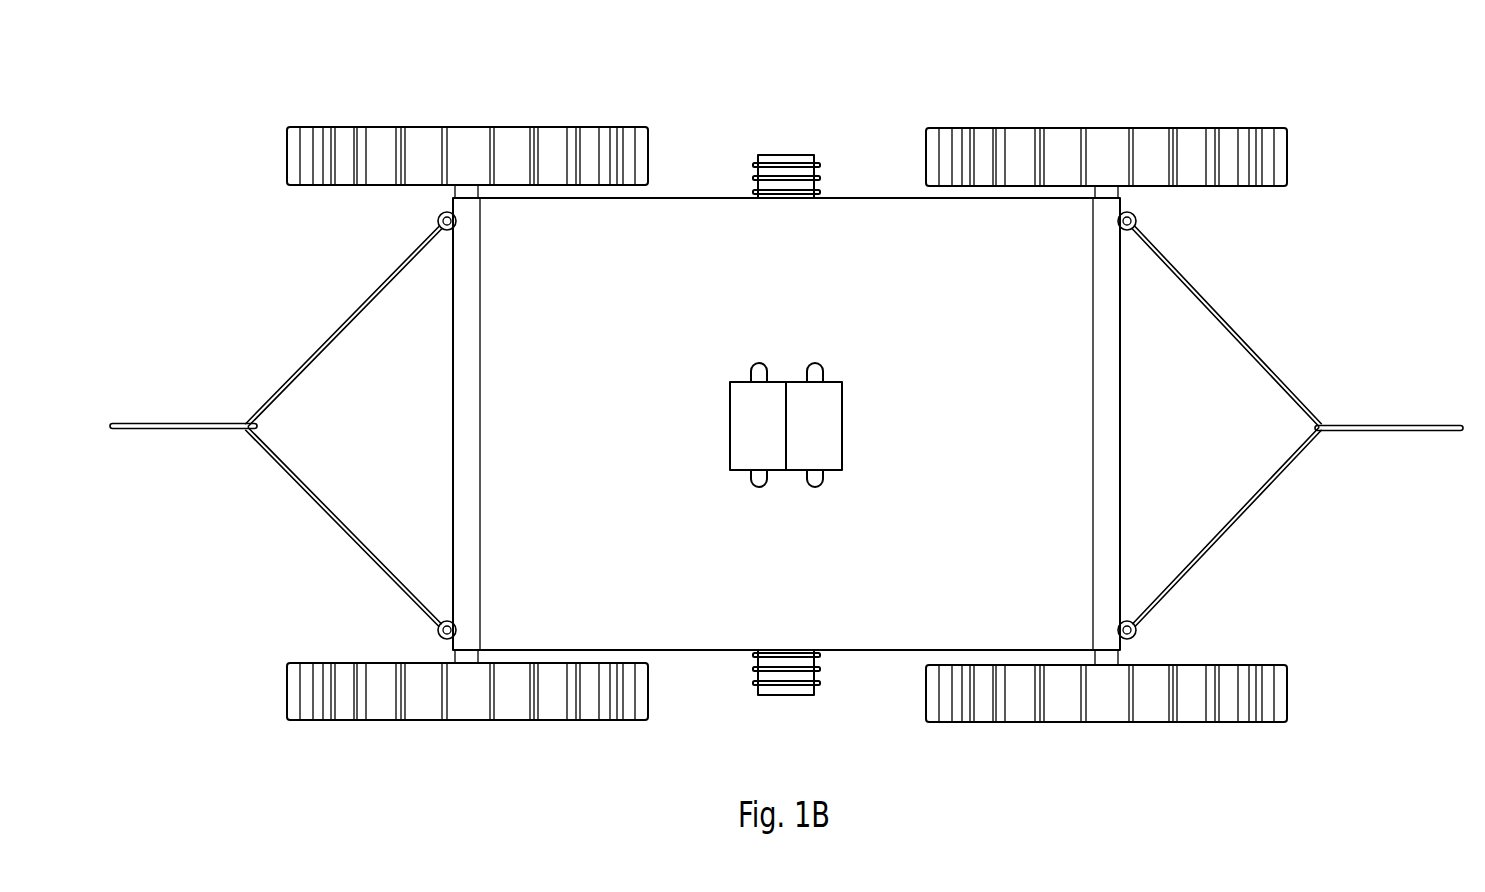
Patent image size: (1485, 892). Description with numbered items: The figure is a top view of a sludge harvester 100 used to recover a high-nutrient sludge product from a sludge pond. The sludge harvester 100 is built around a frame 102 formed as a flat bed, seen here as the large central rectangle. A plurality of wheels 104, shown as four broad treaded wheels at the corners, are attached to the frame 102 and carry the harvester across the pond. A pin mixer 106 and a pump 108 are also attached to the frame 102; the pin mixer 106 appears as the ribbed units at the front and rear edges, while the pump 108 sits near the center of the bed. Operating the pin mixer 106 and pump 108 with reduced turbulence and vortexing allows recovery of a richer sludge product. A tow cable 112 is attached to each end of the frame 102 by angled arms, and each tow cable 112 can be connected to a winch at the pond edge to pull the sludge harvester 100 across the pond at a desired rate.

The sludge harvester 100 is at (873, 135).
The frame 102 is at (594, 343).
The wheels 104 is at (513, 150).
The pin mixer 106 is at (783, 170).
The pump 108 is at (820, 419).
The tow cable 112 is at (150, 424).